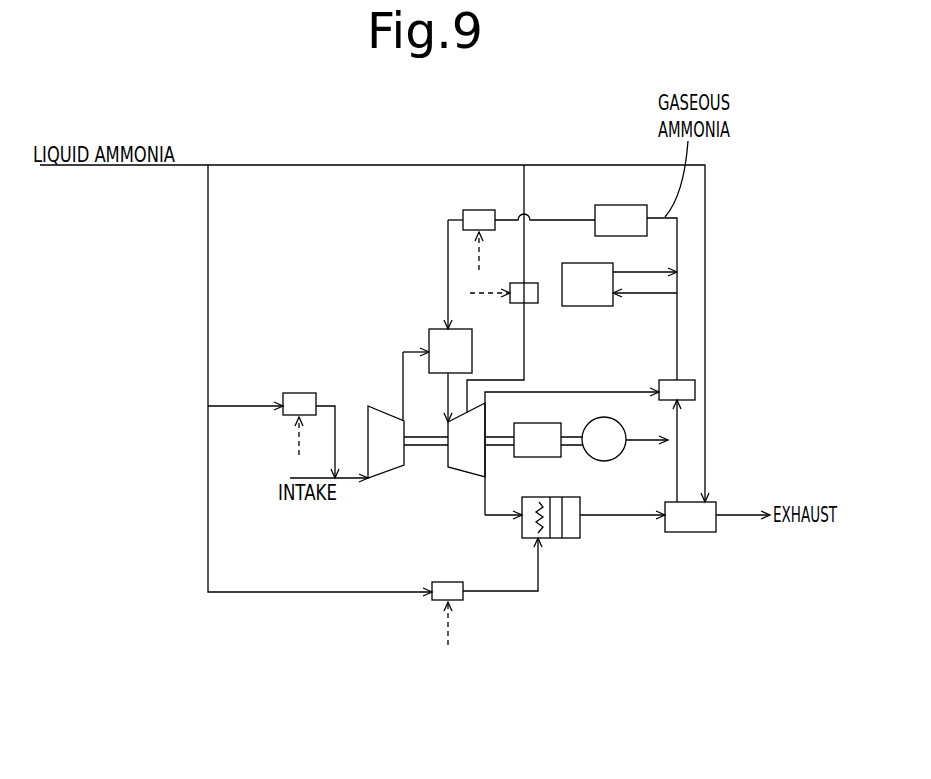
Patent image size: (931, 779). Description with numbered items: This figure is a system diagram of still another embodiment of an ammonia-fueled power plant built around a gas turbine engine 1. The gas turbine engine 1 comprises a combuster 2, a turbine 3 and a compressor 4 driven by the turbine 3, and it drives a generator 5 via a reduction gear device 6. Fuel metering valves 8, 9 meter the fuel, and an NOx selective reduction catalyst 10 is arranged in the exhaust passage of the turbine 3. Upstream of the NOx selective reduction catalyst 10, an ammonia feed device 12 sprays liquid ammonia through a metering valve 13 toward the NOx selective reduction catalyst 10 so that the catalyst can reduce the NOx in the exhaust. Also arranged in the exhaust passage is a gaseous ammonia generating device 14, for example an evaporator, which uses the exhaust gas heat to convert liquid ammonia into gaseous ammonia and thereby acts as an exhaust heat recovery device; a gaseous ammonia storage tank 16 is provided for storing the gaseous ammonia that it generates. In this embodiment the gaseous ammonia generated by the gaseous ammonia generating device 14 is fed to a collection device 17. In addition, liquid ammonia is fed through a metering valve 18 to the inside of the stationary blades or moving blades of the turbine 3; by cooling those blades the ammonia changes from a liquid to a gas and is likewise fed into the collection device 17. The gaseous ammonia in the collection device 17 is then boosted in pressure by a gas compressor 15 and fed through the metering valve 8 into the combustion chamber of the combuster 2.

The gas turbine engine 1 is at (418, 414).
The combuster 2 is at (440, 335).
The turbine 3 is at (466, 461).
The compressor 4 is at (387, 466).
The generator 5 is at (610, 430).
The reduction gear device 6 is at (538, 432).
The fuel metering valve 8 is at (478, 212).
The fuel metering valve 9 is at (297, 392).
The NOx selective reduction catalyst 10 is at (557, 530).
The ammonia feed device 12 is at (535, 520).
The metering valve 13 is at (447, 583).
The gaseous ammonia generating device 14 is at (690, 525).
The gas compressor 15 is at (617, 212).
The gaseous ammonia storage tank 16 is at (587, 292).
The collection device 17 is at (665, 380).
The metering valve 18 is at (520, 297).